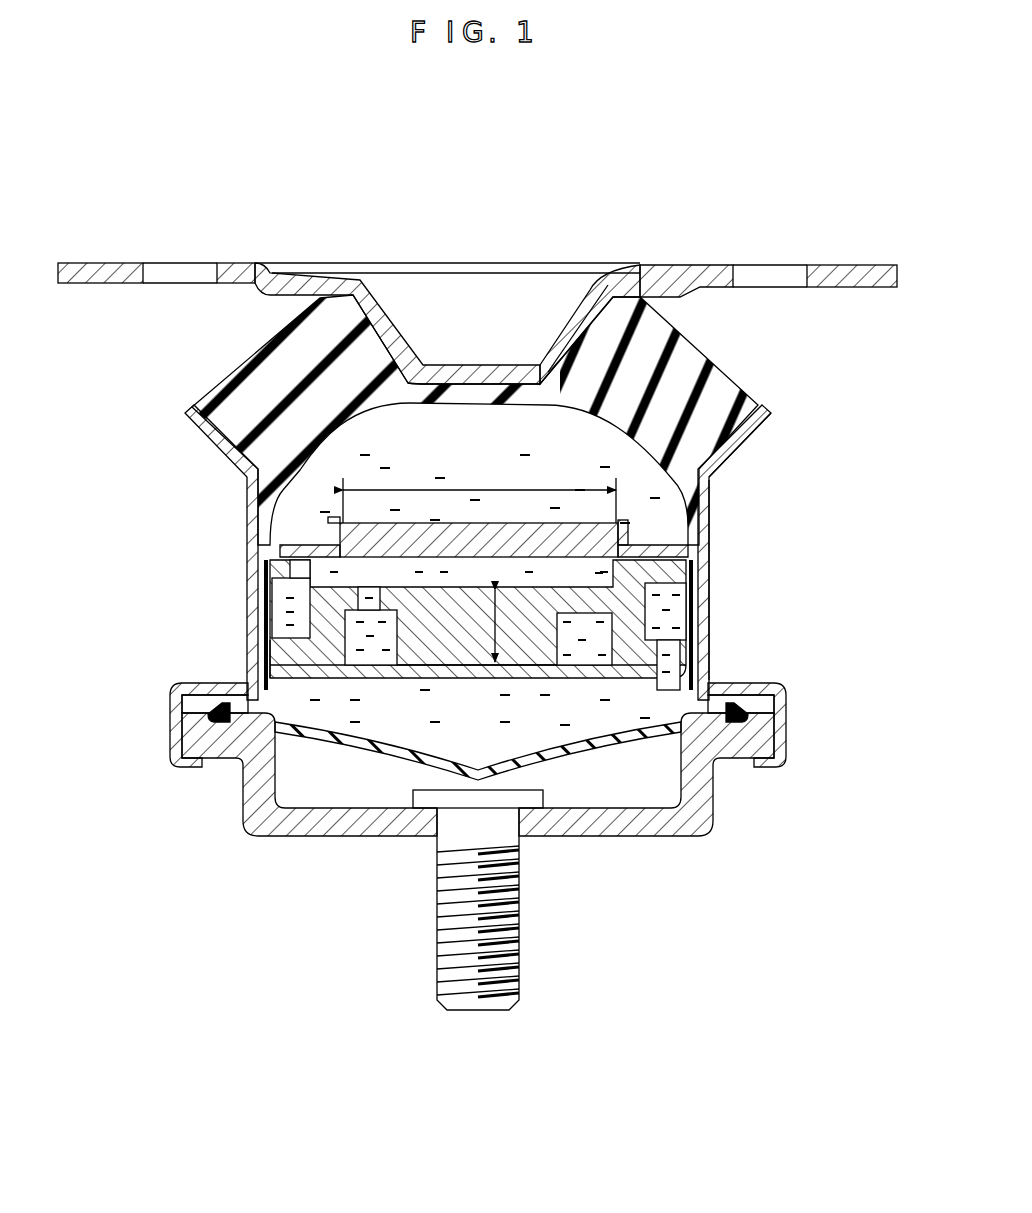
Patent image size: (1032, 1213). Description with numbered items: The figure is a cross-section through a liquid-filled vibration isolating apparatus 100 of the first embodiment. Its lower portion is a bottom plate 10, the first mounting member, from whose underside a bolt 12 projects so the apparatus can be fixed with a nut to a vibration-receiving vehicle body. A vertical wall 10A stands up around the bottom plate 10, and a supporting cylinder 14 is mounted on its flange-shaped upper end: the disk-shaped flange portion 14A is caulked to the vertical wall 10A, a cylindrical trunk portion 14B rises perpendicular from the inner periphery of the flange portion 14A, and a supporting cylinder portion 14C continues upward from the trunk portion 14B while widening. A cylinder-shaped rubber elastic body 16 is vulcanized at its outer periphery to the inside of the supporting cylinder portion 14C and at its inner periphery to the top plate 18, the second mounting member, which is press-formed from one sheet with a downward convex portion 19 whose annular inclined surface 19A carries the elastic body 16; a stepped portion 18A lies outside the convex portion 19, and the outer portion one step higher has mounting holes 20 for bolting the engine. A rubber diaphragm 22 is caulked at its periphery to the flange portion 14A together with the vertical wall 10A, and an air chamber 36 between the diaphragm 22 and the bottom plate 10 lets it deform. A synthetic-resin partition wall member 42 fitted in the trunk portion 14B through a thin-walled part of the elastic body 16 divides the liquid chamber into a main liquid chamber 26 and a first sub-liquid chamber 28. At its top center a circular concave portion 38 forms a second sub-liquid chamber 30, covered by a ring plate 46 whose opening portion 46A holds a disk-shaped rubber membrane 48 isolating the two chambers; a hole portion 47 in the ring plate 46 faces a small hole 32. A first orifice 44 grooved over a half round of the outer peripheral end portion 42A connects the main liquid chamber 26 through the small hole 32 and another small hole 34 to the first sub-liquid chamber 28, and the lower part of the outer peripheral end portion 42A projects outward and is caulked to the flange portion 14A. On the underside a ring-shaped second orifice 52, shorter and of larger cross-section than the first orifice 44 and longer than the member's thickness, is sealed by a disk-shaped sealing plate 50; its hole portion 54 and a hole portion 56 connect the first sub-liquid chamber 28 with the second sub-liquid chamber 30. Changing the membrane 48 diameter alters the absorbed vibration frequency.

The vibration isolating apparatus 100 is at (705, 180).
The top plate 18 is at (88, 263).
The mounting holes 20 is at (206, 263).
The convex portion 19 is at (402, 312).
The annular inclined surface 19A is at (553, 322).
The stepped portion 18A is at (646, 275).
The rubber elastic body 16 is at (726, 395).
The main liquid chamber 26 is at (487, 461).
The rubber membrane 48 is at (490, 523).
The hole portion 47 is at (290, 546).
The ring plate 46 is at (636, 548).
The opening portion 46A is at (617, 536).
The supporting cylinder 14 is at (724, 578).
The flange portion 14A is at (740, 683).
The trunk portion 14B is at (712, 545).
The supporting cylinder portion 14C is at (728, 445).
The partition wall member 42 is at (457, 652).
The outer peripheral end portion 42A is at (266, 650).
The first orifice 44 is at (290, 610).
The small hole 32 is at (285, 580).
The second orifice 52 is at (375, 655).
The hole portion 56 is at (376, 602).
The hole portion 54 is at (580, 670).
The small hole 34 is at (672, 668).
The sealing plate 50 is at (492, 660).
The second sub-liquid chamber 30 is at (504, 587).
The circular concave portion 38 is at (535, 572).
The first sub-liquid chamber 28 is at (487, 745).
The rubber diaphragm 22 is at (340, 748).
The bottom plate 10 is at (607, 837).
The vertical wall 10A is at (702, 795).
The air chamber 36 is at (636, 798).
The bolt 12 is at (521, 916).